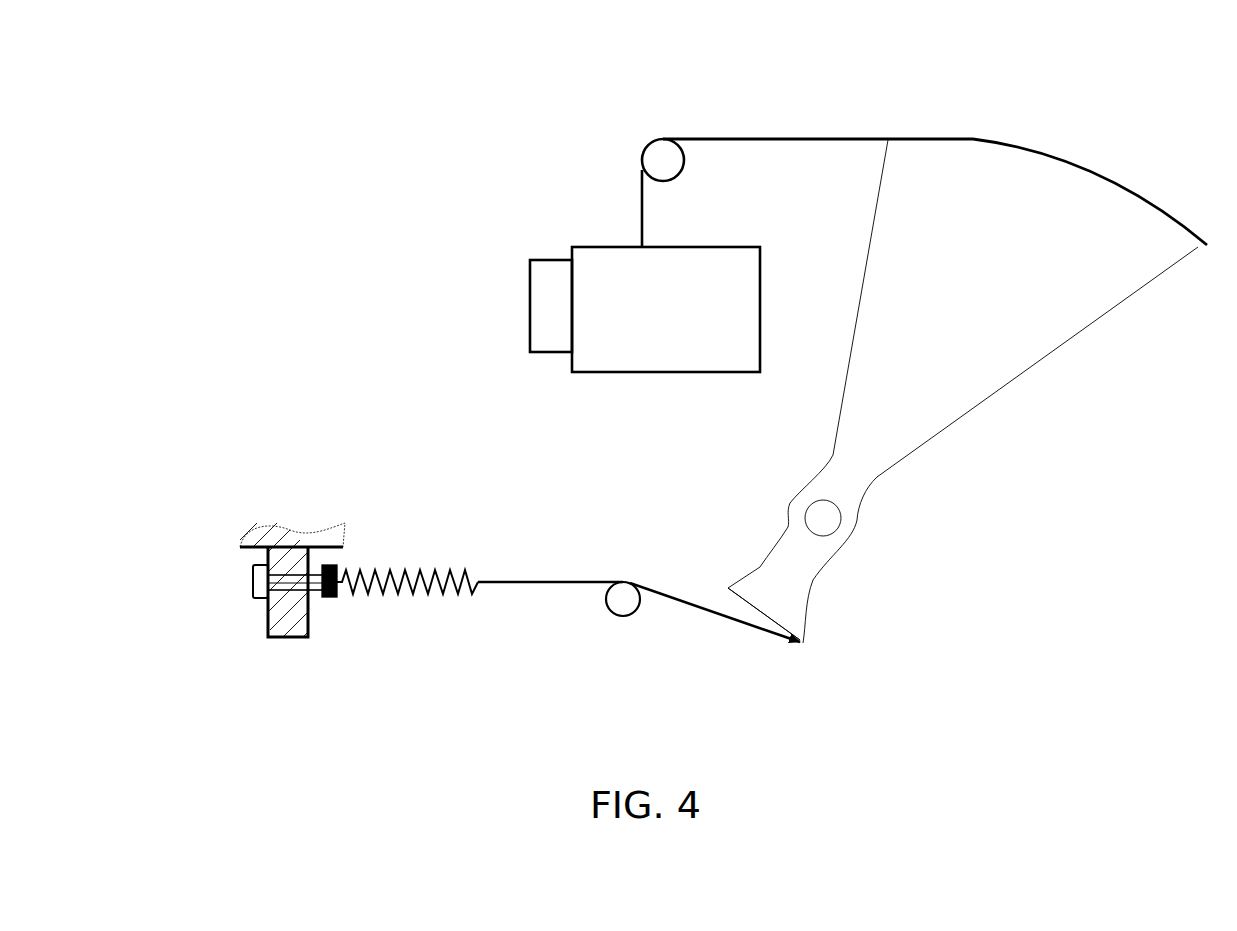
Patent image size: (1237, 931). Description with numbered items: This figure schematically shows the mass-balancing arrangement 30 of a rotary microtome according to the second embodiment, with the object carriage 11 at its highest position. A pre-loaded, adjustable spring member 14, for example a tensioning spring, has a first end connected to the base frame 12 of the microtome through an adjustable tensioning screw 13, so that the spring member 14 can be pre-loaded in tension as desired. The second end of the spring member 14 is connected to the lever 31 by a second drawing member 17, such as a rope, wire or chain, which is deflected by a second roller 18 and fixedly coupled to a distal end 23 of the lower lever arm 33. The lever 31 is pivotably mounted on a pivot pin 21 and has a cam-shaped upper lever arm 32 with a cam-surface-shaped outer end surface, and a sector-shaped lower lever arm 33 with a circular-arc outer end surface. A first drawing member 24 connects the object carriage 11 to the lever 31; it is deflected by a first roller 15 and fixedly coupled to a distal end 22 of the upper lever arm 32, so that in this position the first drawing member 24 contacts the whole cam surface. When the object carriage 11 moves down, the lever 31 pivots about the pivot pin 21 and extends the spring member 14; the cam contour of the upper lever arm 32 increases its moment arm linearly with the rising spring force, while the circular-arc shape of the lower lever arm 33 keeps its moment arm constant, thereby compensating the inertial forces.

The object carriage 11 is at (582, 297).
The base frame 12 is at (287, 543).
The adjustable tensioning screw 13 is at (260, 583).
The spring member 14 is at (422, 583).
The first roller 15 is at (665, 160).
The second drawing member 17 is at (580, 583).
The second roller 18 is at (620, 607).
The pivot pin 21 is at (830, 528).
The distal end of the third outer end surface 22 is at (1198, 247).
The distal end of the fourth outer end surface 23 is at (800, 642).
The first drawing member 24 is at (797, 139).
The mass-balancing arrangement 30 is at (427, 378).
The lever 31 is at (818, 385).
The upper lever arm 32 is at (1062, 350).
The lower lever arm 33 is at (793, 592).